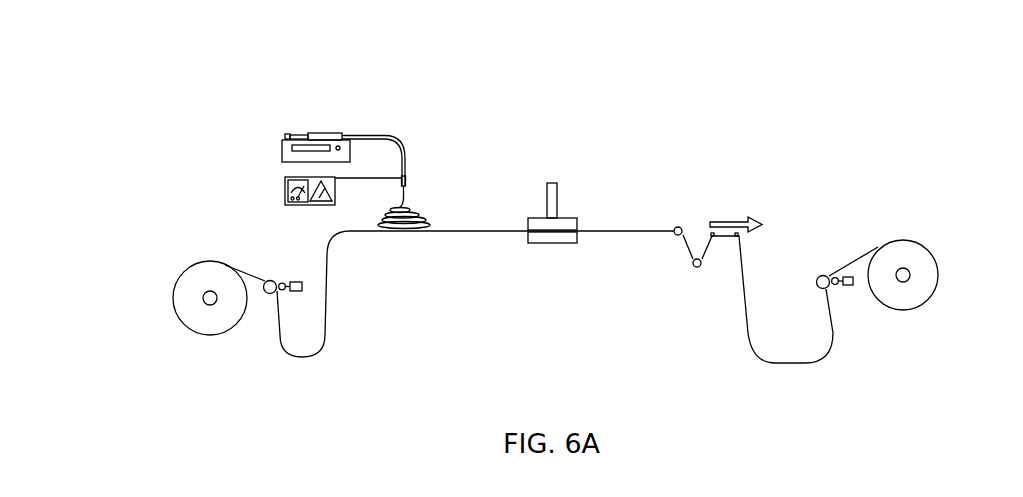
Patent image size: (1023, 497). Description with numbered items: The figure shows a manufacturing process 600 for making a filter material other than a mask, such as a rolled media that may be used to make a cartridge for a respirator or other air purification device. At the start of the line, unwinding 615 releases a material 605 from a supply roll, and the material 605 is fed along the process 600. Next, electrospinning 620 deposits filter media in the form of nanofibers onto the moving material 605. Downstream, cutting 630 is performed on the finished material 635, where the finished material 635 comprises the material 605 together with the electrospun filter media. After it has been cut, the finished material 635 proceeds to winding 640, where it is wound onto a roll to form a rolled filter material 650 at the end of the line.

The manufacturing process 600 is at (252, 65).
The material 605 is at (330, 335).
The unwinding 615 is at (263, 267).
The electrospinning 620 is at (432, 163).
The cutting 630 is at (582, 225).
The finished material 635 is at (468, 238).
The winding 640 is at (833, 265).
The rolled filter material 650 is at (935, 243).